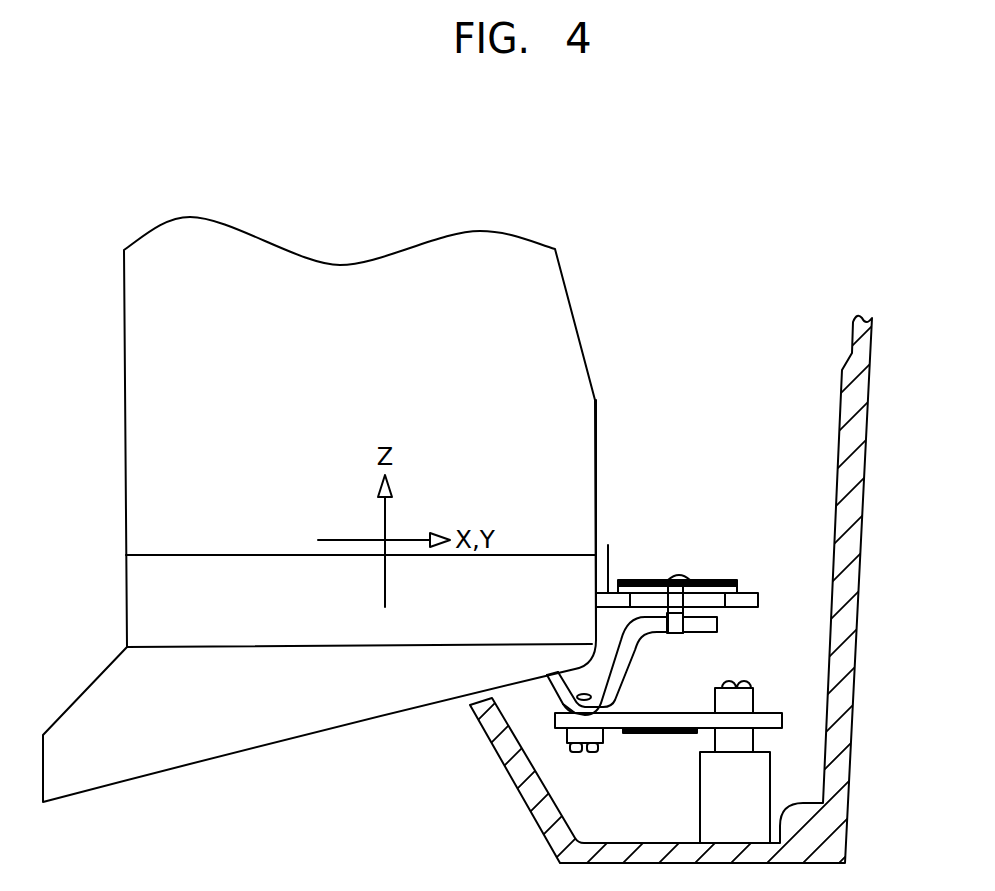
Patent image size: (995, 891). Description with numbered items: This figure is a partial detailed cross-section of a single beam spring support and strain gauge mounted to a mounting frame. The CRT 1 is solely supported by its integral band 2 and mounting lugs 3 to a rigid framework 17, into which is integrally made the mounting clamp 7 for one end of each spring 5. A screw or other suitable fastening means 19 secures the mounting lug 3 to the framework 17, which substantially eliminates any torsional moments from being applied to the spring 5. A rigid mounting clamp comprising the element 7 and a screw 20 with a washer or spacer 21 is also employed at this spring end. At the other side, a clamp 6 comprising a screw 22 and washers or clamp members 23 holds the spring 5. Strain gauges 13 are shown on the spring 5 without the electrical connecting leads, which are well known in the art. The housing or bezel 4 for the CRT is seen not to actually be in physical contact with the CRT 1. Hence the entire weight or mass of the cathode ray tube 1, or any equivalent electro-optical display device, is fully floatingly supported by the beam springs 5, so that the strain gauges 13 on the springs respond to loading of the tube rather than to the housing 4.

The CRT 1 is at (197, 772).
The integral band 2 is at (565, 580).
The mounting lug 3 is at (608, 545).
The housing or bezel 4 is at (858, 492).
The beam spring 5 is at (635, 714).
The clamp 6 is at (768, 803).
The mounting clamp 7 is at (575, 709).
The strain gauge 13 is at (643, 735).
The rigid framework 17 is at (718, 624).
The screw or fastening means 19 is at (665, 572).
The screw 20 is at (575, 757).
The washer or spacer 21 is at (565, 740).
The screw 22 is at (740, 683).
The washers or clamp members 23 is at (748, 700).